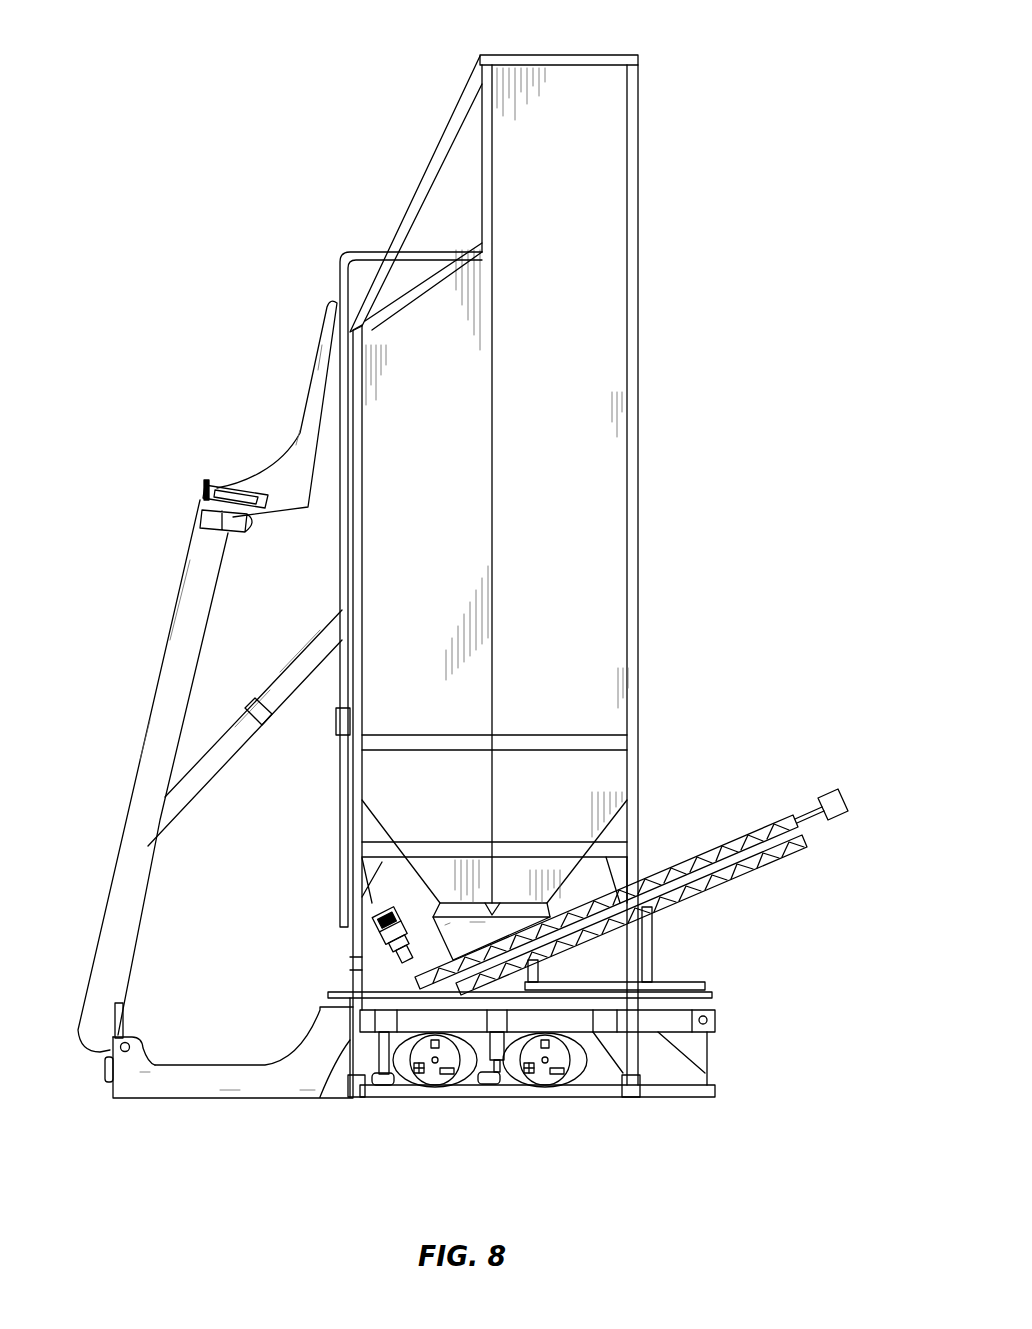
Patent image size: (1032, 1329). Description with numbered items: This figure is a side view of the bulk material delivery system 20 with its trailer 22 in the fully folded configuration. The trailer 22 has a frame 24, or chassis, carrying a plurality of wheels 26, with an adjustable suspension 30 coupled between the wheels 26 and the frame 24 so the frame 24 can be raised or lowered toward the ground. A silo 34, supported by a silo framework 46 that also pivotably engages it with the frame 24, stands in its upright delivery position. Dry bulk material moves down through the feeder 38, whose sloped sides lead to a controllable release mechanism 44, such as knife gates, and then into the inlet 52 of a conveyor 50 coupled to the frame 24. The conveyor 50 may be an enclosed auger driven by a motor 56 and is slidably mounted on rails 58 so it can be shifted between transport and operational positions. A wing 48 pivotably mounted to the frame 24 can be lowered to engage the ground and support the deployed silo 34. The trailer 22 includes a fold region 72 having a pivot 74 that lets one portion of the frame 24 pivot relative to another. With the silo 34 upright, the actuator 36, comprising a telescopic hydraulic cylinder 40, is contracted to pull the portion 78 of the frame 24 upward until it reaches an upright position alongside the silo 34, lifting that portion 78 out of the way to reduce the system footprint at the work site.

The bulk material delivery system 20 is at (212, 59).
The trailer 22 is at (278, 465).
The frame 24 is at (148, 1100).
The wheels 26 is at (455, 1085).
The adjustable suspension 30 is at (497, 1104).
The silo 34 is at (641, 422).
The actuator 36 is at (254, 695).
The feeder 38 is at (568, 882).
The telescopic hydraulic cylinder 40 is at (247, 747).
The controllable release mechanism 44 is at (512, 912).
The silo framework 46 is at (480, 152).
The wing 48 is at (700, 1098).
The conveyor 50 is at (852, 797).
The inlet 52 is at (474, 930).
The motor 56 is at (380, 930).
The rails 58 is at (338, 990).
The fold region 72 is at (90, 1066).
The pivot 74 is at (138, 1048).
The portion of trailer frame 78 is at (88, 975).